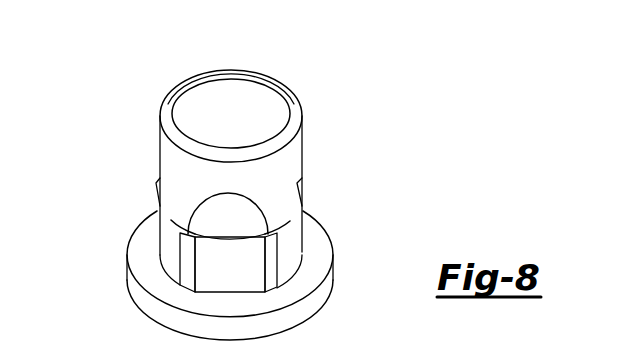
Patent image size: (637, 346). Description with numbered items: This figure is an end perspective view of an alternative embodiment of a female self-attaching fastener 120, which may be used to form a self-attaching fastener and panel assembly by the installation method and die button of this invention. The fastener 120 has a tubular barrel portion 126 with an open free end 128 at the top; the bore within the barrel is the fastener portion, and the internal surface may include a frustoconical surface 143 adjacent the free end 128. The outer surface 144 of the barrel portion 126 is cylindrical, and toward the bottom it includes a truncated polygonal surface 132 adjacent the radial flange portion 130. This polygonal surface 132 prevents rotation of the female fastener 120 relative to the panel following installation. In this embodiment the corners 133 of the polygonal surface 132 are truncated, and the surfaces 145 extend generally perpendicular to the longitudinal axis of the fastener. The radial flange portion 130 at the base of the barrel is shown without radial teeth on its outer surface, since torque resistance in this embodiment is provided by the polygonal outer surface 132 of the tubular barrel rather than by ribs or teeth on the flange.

The female self-attaching fastener 120 is at (146, 146).
The tubular barrel portion 126 is at (320, 124).
The open free end 128 is at (289, 92).
The radial flange portion 130 is at (141, 305).
The truncated polygonal surface 132 is at (298, 240).
The corners of the polygonal surface 133 is at (188, 249).
The frustoconical surface 143 is at (191, 83).
The outer surface 144 is at (295, 187).
The surfaces extending perpendicular to the longitudinal axis 145 is at (228, 204).